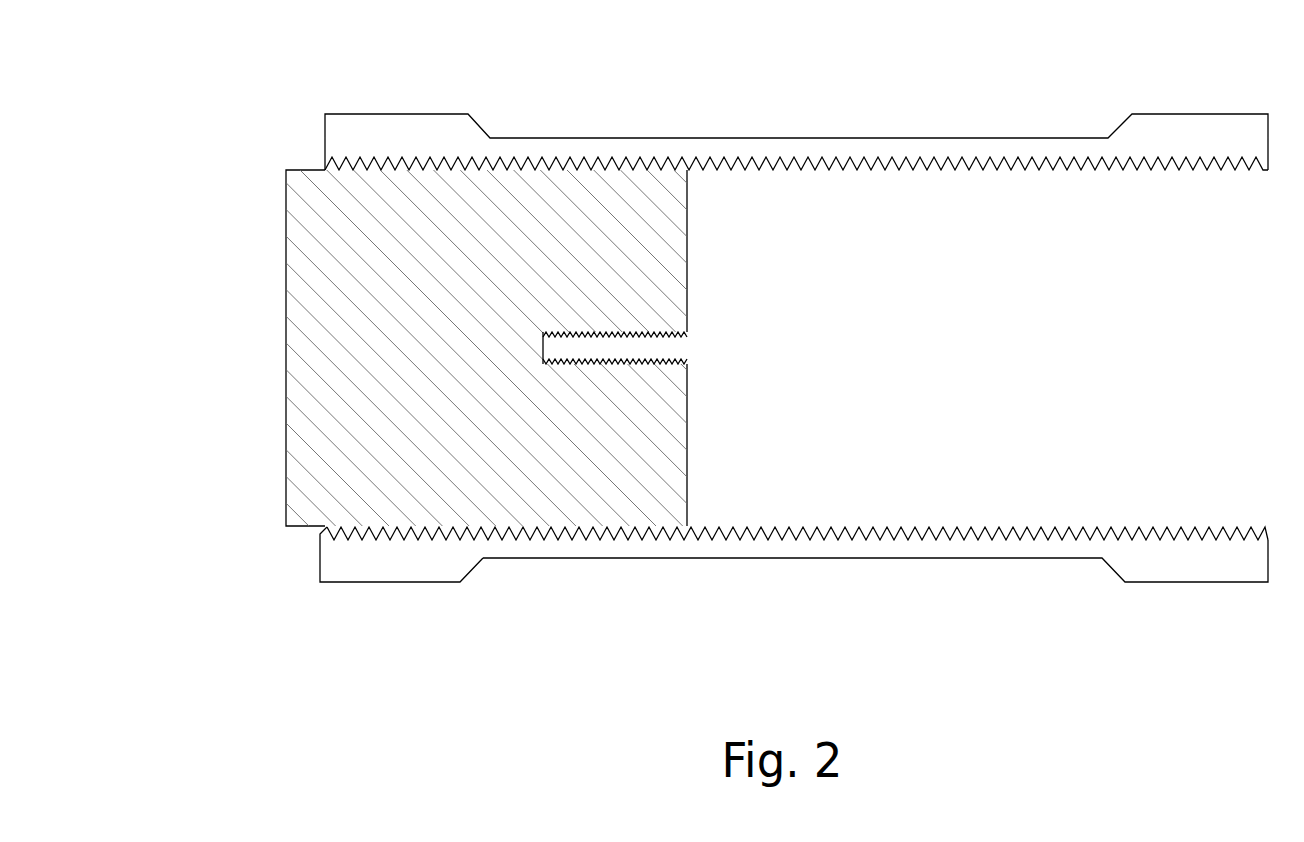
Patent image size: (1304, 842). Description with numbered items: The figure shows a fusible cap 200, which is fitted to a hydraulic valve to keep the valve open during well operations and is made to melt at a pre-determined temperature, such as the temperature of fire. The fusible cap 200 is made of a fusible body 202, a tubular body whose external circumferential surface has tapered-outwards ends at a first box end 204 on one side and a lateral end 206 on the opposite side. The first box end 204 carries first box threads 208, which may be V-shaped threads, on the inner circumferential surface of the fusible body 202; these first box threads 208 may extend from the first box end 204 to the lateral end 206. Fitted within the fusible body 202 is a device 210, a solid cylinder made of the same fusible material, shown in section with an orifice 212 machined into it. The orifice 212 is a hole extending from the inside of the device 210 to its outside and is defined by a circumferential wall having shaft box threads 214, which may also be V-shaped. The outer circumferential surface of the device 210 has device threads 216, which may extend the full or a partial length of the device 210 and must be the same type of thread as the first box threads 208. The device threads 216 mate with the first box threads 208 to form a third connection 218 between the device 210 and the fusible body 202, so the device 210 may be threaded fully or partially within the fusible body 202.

The fusible cap 200 is at (295, 630).
The fusible body 202 is at (860, 138).
The first box end 204 is at (1190, 582).
The lateral end 206 is at (402, 583).
The first box threads 208 is at (1147, 527).
The device 210 is at (407, 365).
The orifice 212 is at (678, 345).
The shaft box threads 214 is at (667, 367).
The device threads 216 is at (598, 168).
The third connection 218 is at (347, 483).